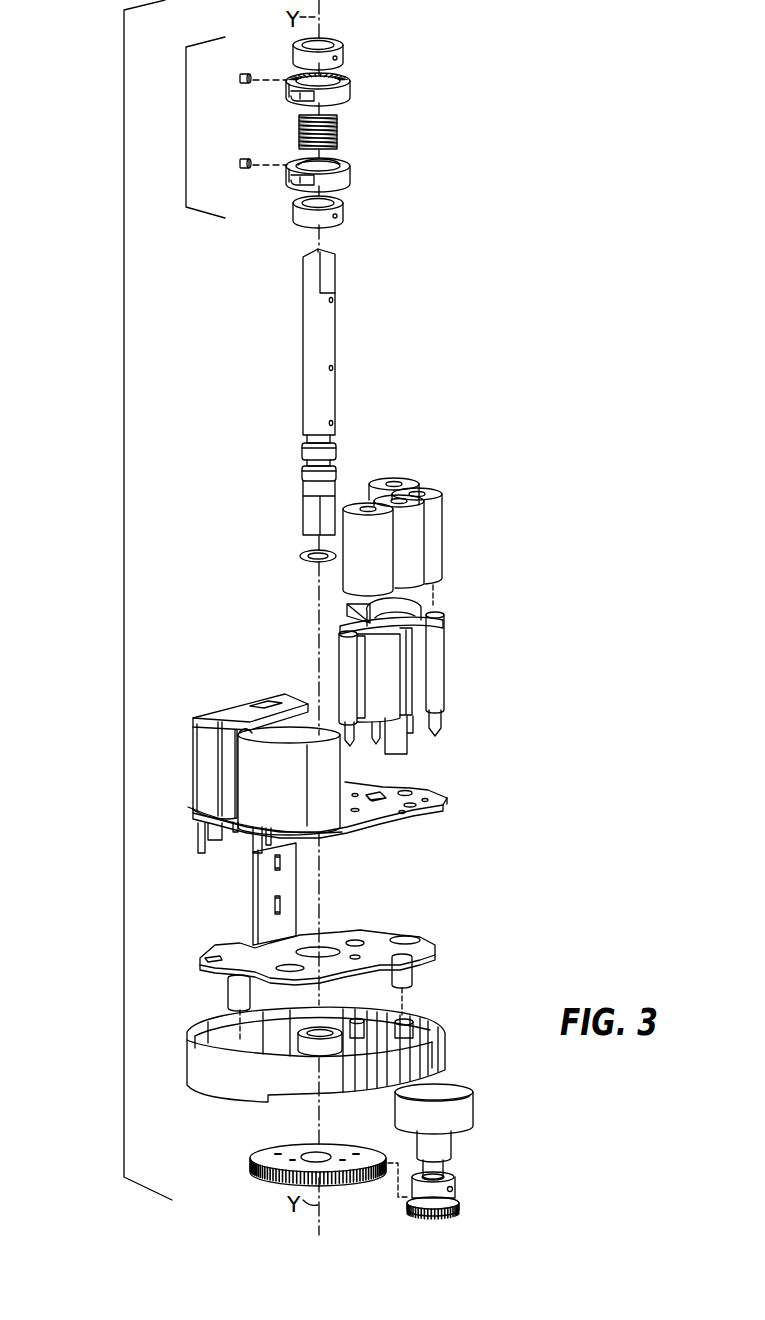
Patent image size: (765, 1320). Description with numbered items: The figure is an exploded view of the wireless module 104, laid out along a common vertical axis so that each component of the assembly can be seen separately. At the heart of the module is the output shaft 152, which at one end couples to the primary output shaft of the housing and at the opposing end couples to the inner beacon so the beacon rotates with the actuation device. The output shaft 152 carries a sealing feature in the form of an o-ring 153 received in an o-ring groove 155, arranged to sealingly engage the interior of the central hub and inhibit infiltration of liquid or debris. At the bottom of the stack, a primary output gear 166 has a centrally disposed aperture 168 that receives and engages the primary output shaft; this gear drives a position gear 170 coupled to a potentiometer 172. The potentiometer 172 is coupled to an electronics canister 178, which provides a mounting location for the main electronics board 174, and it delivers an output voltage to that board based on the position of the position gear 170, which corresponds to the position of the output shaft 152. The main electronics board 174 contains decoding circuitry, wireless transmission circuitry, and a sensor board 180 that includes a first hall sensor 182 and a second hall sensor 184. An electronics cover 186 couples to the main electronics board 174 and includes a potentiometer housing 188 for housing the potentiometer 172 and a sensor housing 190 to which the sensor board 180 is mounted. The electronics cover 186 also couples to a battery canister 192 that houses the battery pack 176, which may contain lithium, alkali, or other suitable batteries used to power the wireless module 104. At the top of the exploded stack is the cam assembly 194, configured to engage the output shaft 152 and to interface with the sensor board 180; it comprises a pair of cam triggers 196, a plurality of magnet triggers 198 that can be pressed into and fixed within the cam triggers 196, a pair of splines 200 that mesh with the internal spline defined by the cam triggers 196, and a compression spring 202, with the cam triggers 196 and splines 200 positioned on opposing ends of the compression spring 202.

The wireless module 104 is at (124, 625).
The output shaft 152 is at (331, 340).
The o-ring 153 is at (300, 557).
The o-ring groove 155 is at (303, 440).
The primary output gear 166 is at (249, 1158).
The centrally disposed aperture 168 is at (310, 1153).
The position gear 170 is at (460, 1206).
The potentiometer 172 is at (465, 1115).
The main electronics board 174 is at (425, 935).
The battery pack 176 is at (437, 527).
The electronics canister 178 is at (437, 1048).
The sensor board 180 is at (252, 918).
The first hall sensor 182 is at (283, 862).
The second hall sensor 184 is at (283, 905).
The electronics cover 186 is at (440, 790).
The potentiometer housing 188 is at (263, 777).
The sensor housing 190 is at (228, 695).
The battery canister 192 is at (440, 662).
The cam assembly 194 is at (186, 125).
The cam triggers 196 is at (351, 88).
The magnet triggers 198 is at (244, 156).
The splines 200 is at (345, 53).
The compression spring 202 is at (340, 133).